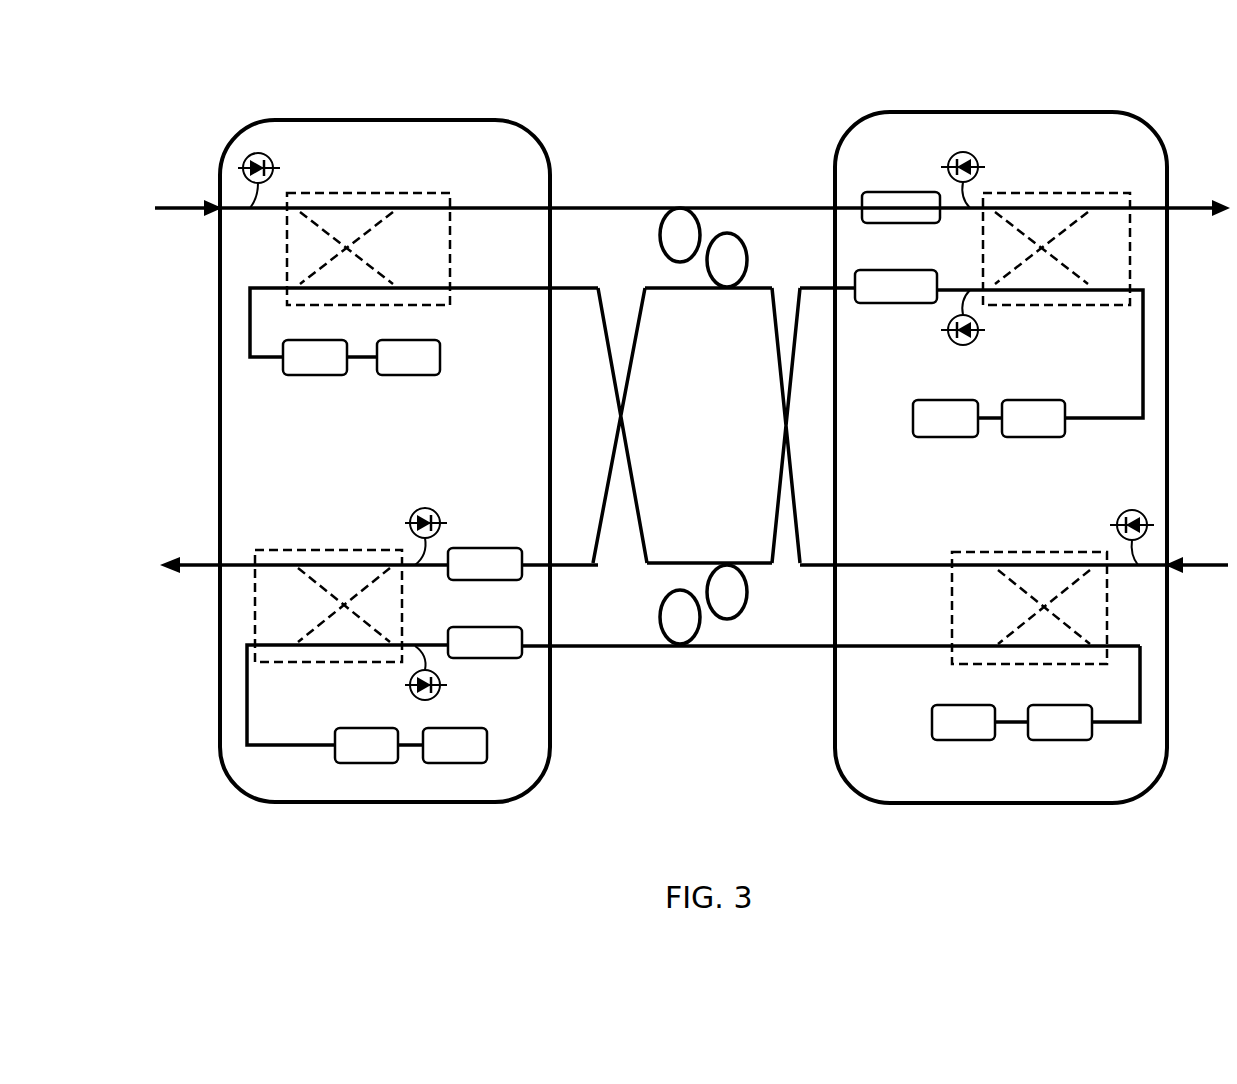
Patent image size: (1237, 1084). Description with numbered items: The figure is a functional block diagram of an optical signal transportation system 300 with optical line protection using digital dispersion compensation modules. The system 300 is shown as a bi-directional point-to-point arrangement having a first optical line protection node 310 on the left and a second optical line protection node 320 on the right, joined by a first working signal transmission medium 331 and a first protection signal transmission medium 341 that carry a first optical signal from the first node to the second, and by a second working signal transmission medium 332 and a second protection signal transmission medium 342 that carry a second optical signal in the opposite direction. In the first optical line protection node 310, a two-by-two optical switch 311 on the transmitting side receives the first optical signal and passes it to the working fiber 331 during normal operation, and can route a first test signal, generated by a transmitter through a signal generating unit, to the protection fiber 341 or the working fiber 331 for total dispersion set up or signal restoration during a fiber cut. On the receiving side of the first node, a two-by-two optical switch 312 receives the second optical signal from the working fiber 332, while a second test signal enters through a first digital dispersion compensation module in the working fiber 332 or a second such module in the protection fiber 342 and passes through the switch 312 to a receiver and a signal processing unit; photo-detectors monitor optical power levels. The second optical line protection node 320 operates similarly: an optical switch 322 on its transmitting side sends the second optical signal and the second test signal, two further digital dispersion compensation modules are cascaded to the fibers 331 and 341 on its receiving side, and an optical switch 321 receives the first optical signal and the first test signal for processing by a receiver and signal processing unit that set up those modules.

The optical signal transportation system 300 is at (806, 821).
The first optical line protection node 310 is at (420, 802).
The second optical line protection node 320 is at (945, 803).
The optical switch 311 is at (433, 193).
The optical switch 312 is at (273, 550).
The optical switch 321 is at (1068, 193).
The optical switch 322 is at (963, 552).
The first working signal transmission medium 331 is at (622, 207).
The second working signal transmission medium 332 is at (760, 283).
The first protection signal transmission medium 341 is at (767, 565).
The second protection signal transmission medium 342 is at (577, 647).